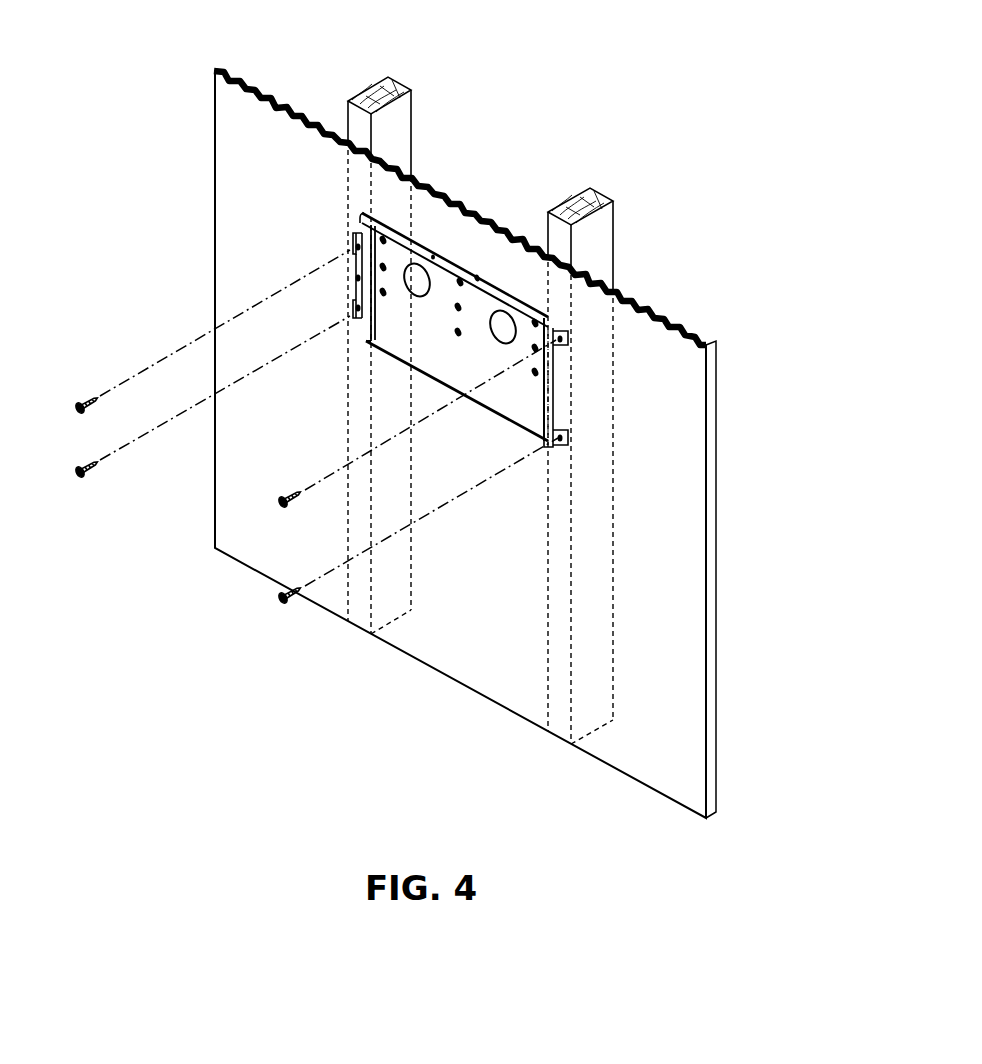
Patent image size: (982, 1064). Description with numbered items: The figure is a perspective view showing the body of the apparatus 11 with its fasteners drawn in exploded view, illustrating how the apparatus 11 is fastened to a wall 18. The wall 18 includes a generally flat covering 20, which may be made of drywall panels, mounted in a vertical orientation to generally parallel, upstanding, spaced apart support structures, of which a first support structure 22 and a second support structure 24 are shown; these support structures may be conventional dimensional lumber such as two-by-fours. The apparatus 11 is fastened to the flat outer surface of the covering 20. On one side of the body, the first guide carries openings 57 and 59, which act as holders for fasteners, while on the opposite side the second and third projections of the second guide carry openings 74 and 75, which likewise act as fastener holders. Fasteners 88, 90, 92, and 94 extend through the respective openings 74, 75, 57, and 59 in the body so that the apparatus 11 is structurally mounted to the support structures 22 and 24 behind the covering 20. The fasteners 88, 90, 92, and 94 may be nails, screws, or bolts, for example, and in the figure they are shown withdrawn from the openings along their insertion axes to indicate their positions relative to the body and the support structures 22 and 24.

The apparatus 11 is at (468, 320).
The wall 18 is at (423, 414).
The covering 20 is at (268, 147).
The first support structure 22 is at (607, 232).
The second support structure 24 is at (403, 118).
The opening 57 is at (357, 247).
The opening 59 is at (357, 308).
The opening 74 is at (568, 338).
The opening 75 is at (568, 437).
The fastener 88 is at (283, 503).
The fastener 90 is at (283, 601).
The fastener 92 is at (88, 400).
The fastener 94 is at (88, 465).